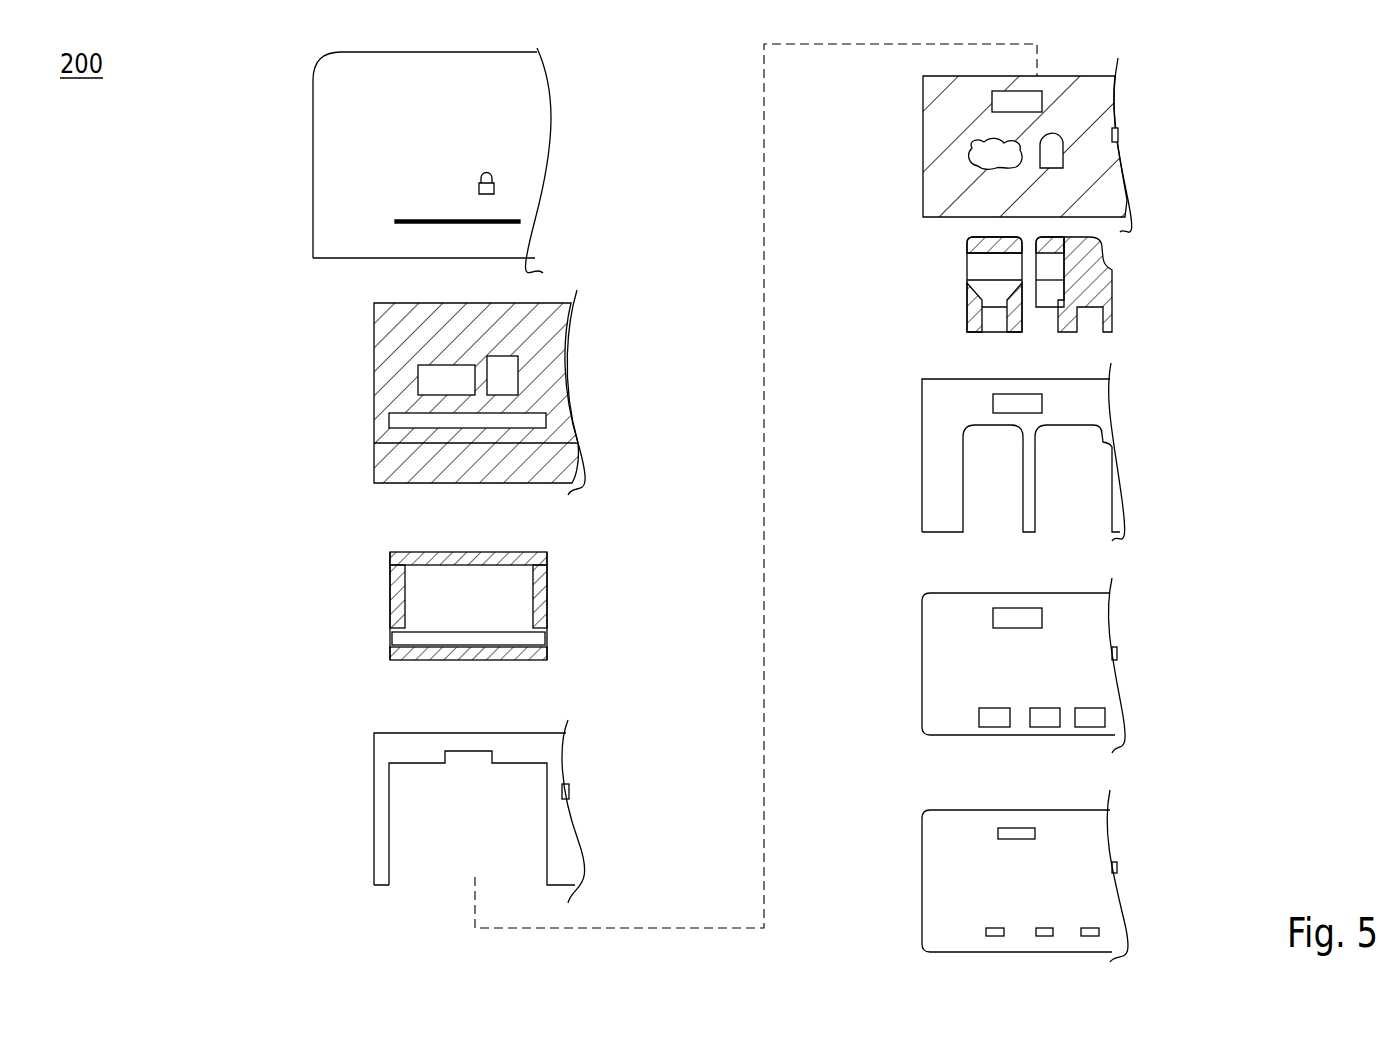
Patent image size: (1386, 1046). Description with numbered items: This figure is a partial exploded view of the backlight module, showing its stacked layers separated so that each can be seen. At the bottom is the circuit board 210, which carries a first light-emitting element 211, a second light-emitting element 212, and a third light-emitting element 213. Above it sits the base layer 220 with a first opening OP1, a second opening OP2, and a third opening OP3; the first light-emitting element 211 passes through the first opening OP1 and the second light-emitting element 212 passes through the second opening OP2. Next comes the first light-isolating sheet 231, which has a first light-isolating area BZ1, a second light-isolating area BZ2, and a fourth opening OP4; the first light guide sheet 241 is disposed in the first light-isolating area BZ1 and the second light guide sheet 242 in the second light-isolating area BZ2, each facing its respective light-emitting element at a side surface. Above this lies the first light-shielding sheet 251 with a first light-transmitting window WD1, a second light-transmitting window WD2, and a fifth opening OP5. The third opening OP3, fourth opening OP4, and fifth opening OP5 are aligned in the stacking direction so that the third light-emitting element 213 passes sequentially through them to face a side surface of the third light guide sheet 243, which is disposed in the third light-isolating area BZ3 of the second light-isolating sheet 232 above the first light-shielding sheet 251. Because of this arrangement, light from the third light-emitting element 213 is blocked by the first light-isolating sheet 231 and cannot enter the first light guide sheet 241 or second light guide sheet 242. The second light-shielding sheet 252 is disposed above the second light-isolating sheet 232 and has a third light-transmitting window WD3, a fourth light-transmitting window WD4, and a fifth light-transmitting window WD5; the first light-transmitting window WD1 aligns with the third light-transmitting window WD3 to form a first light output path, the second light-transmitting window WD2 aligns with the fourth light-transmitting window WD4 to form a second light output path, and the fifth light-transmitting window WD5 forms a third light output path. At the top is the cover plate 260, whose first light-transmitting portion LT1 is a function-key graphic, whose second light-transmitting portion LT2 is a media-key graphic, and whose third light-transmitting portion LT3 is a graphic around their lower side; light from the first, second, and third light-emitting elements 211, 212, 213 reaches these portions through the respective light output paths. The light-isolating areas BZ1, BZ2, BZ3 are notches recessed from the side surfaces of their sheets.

The cover plate 260 is at (350, 110).
The first light-transmitting portion LT1 is at (484, 174).
The second light-transmitting portion LT2 is at (417, 185).
The third light-transmitting portion LT3 is at (395, 221).
The second light-shielding sheet 252 is at (392, 328).
The third light-transmitting window WD3 is at (535, 376).
The fourth light-transmitting window WD4 is at (405, 375).
The fifth light-transmitting window WD5 is at (560, 414).
The third light guide sheet 243 is at (390, 598).
The second light-isolating sheet 232 is at (383, 787).
The third light-isolating area BZ3 is at (405, 831).
The first light-shielding sheet 251 is at (1108, 192).
The fifth opening OP5 is at (978, 93).
The first light-transmitting window WD1 is at (1062, 147).
The second light-transmitting window WD2 is at (958, 147).
The second light guide sheet 242 is at (967, 300).
The first light guide sheet 241 is at (1112, 287).
The first light-isolating sheet 231 is at (1098, 405).
The fourth opening OP4 is at (978, 396).
The first light-isolating area BZ1 is at (1090, 478).
The second light-isolating area BZ2 is at (966, 480).
The base layer 220 is at (1112, 683).
The first opening OP1 is at (1035, 695).
The second opening OP2 is at (966, 712).
The third opening OP3 is at (976, 612).
The circuit board 210 is at (963, 862).
The first light-emitting element 211 is at (1038, 928).
The second light-emitting element 212 is at (986, 932).
The third light-emitting element 213 is at (998, 833).